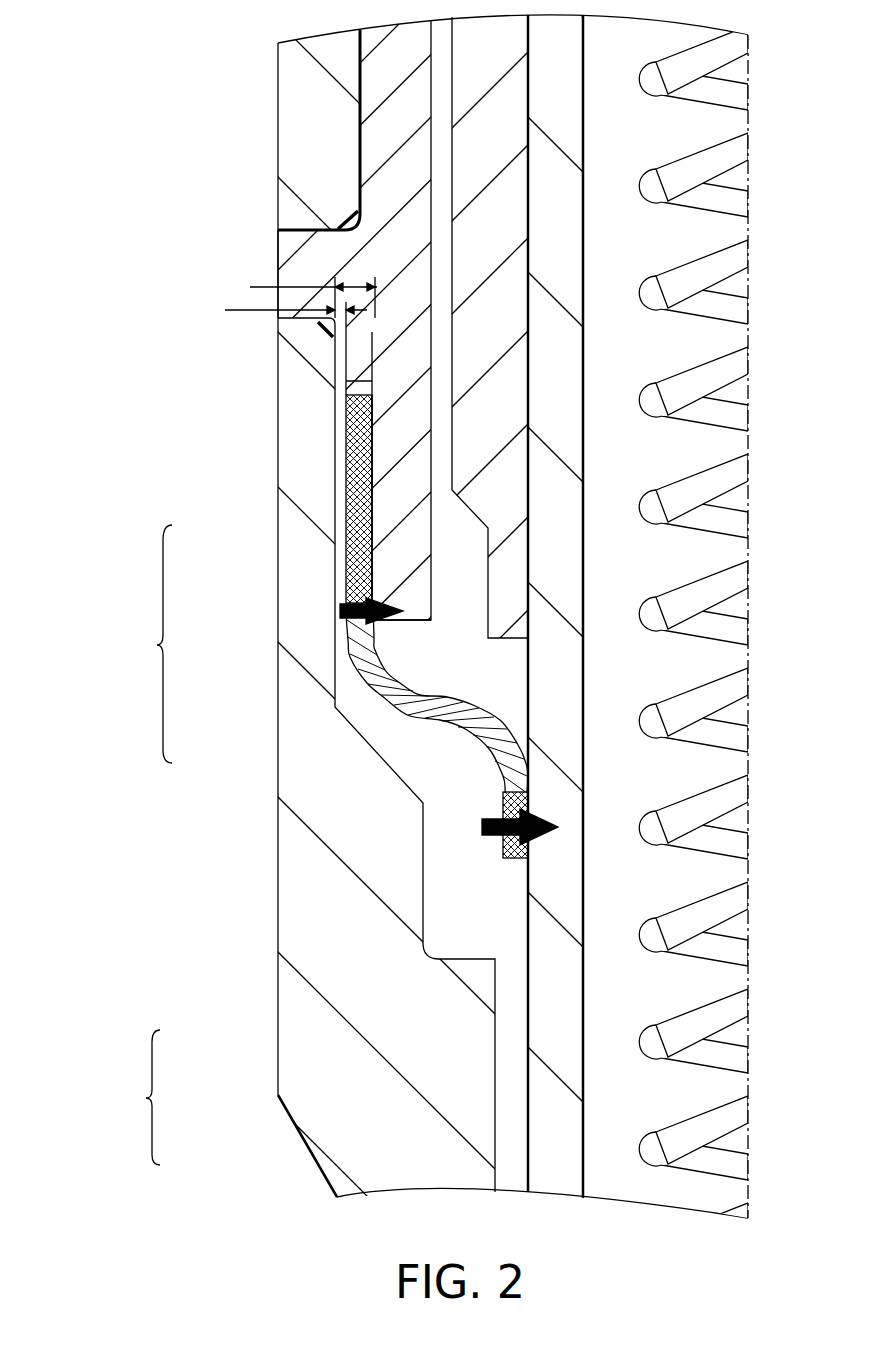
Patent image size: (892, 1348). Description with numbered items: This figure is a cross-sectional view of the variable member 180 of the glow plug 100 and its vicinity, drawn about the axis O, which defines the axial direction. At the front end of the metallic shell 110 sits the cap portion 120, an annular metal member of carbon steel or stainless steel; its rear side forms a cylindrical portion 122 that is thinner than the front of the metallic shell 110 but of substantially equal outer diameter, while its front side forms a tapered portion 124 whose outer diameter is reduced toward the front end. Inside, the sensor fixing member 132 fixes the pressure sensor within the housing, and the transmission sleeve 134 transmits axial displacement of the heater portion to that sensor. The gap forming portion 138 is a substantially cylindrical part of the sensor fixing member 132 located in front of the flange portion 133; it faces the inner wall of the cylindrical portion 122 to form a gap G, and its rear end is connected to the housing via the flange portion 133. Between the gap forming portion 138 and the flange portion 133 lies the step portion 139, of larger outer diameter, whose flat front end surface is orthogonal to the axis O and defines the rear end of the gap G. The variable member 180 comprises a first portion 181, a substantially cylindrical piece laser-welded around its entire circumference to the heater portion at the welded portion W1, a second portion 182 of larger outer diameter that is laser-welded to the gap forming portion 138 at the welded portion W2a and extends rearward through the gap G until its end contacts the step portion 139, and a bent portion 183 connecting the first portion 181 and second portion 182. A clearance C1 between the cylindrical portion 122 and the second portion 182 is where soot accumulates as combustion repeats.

The glow plug 100 is at (118, 78).
The metallic shell 110 is at (278, 97).
The cap portion 120 is at (132, 1097).
The cylindrical portion 122 is at (278, 1048).
The tapered portion 124 is at (313, 1182).
The sensor fixing member 132 is at (383, 155).
The flange portion 133 is at (278, 246).
The transmission sleeve 134 is at (462, 214).
The gap forming portion 138 is at (400, 487).
The step portion 139 is at (360, 386).
The variable member 180 is at (143, 644).
The first portion 181 is at (503, 808).
The second portion 182 is at (353, 528).
The bent portion 183 is at (400, 698).
The axis O is at (748, 65).
The gap G is at (313, 288).
The clearance C1 is at (281, 298).
The welded portion W1 is at (482, 827).
The welded portion W2a is at (340, 612).